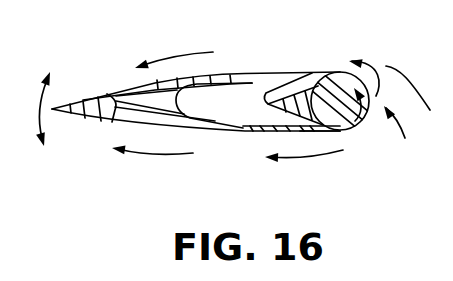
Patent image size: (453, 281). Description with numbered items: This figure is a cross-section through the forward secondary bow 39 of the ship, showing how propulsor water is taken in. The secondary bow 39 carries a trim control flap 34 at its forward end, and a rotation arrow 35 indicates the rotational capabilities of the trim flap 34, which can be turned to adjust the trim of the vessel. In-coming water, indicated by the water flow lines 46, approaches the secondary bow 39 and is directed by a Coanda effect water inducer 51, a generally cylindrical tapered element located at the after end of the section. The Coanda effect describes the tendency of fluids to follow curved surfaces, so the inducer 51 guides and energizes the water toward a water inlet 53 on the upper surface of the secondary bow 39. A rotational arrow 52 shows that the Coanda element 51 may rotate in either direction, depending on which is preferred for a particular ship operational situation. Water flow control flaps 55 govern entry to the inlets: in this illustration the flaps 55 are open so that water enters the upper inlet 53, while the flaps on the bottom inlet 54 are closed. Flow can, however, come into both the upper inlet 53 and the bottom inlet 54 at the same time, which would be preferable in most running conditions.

The trim control flap 34 is at (88, 122).
The rotation arrow 35 is at (41, 126).
The secondary bow 39 is at (217, 72).
The water flow lines 46 is at (236, 92).
The Coanda effect water inducer 51 is at (358, 128).
The rotational arrow 52 is at (375, 97).
The water inlet 53 is at (269, 72).
The bottom inlet 54 is at (243, 132).
The water flow control flaps 55 is at (257, 132).